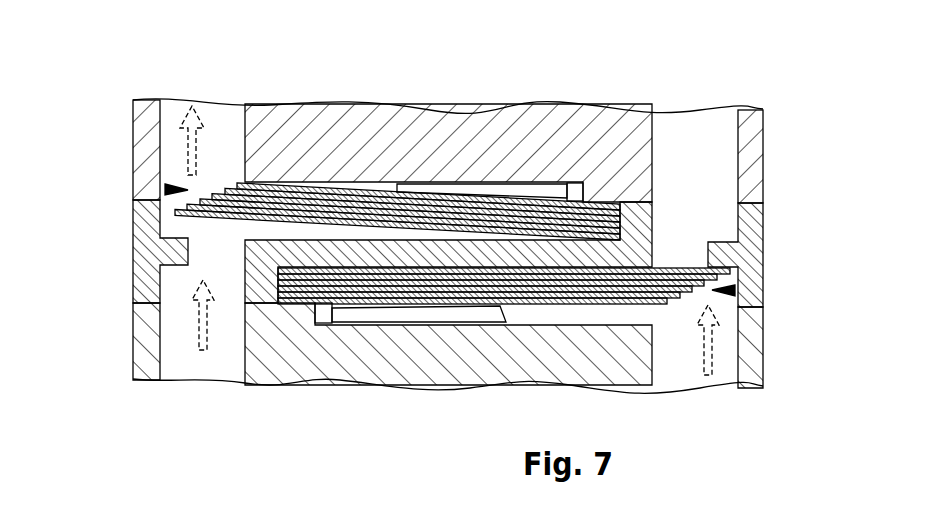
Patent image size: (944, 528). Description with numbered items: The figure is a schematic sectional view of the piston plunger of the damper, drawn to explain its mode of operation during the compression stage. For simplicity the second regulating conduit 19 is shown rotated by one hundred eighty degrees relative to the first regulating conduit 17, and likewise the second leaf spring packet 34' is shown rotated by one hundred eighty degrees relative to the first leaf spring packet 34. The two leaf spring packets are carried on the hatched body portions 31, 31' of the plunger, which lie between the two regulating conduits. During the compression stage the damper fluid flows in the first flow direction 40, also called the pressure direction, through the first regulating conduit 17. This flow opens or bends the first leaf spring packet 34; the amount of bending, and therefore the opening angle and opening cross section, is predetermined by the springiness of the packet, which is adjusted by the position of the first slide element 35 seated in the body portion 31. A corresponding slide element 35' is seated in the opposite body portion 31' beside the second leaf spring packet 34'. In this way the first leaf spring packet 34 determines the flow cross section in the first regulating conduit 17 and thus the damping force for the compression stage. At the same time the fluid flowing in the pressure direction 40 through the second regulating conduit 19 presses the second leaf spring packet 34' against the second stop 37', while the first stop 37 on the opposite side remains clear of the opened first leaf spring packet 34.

The first regulating conduit 17 is at (170, 148).
The second regulating conduit 19 is at (708, 162).
The upper carrier block 31 is at (448, 126).
The lower carrier block 31' is at (448, 374).
The first leaf spring packet 34 is at (354, 210).
The second leaf spring packet 34' is at (548, 287).
The first slide element 35 is at (490, 126).
The lower spring strip 35' is at (410, 374).
The first stop 37 is at (138, 251).
The second stop 37' is at (763, 255).
The first flow direction 40 is at (192, 108).